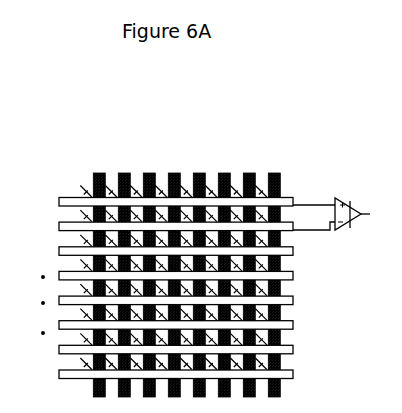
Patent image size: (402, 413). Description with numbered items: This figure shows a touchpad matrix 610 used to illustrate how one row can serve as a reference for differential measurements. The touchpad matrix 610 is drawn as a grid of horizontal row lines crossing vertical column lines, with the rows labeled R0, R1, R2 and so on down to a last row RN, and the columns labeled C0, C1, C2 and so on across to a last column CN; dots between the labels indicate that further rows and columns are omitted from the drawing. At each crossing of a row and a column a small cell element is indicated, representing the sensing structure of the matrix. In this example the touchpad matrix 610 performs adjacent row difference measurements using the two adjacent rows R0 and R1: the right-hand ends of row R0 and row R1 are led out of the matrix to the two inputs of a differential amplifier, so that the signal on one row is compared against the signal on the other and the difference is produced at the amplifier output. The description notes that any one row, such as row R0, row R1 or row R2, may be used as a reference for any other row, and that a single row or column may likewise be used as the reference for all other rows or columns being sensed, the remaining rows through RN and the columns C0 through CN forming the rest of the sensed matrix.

The touchpad matrix 610 is at (113, 80).
The row R0 is at (157, 204).
The row R1 is at (157, 229).
The row R2 is at (157, 254).
The row line RN is at (157, 375).
The column line C0 is at (99, 271).
The column line C1 is at (123, 167).
The column line C2 is at (149, 271).
The column line CN is at (270, 271).